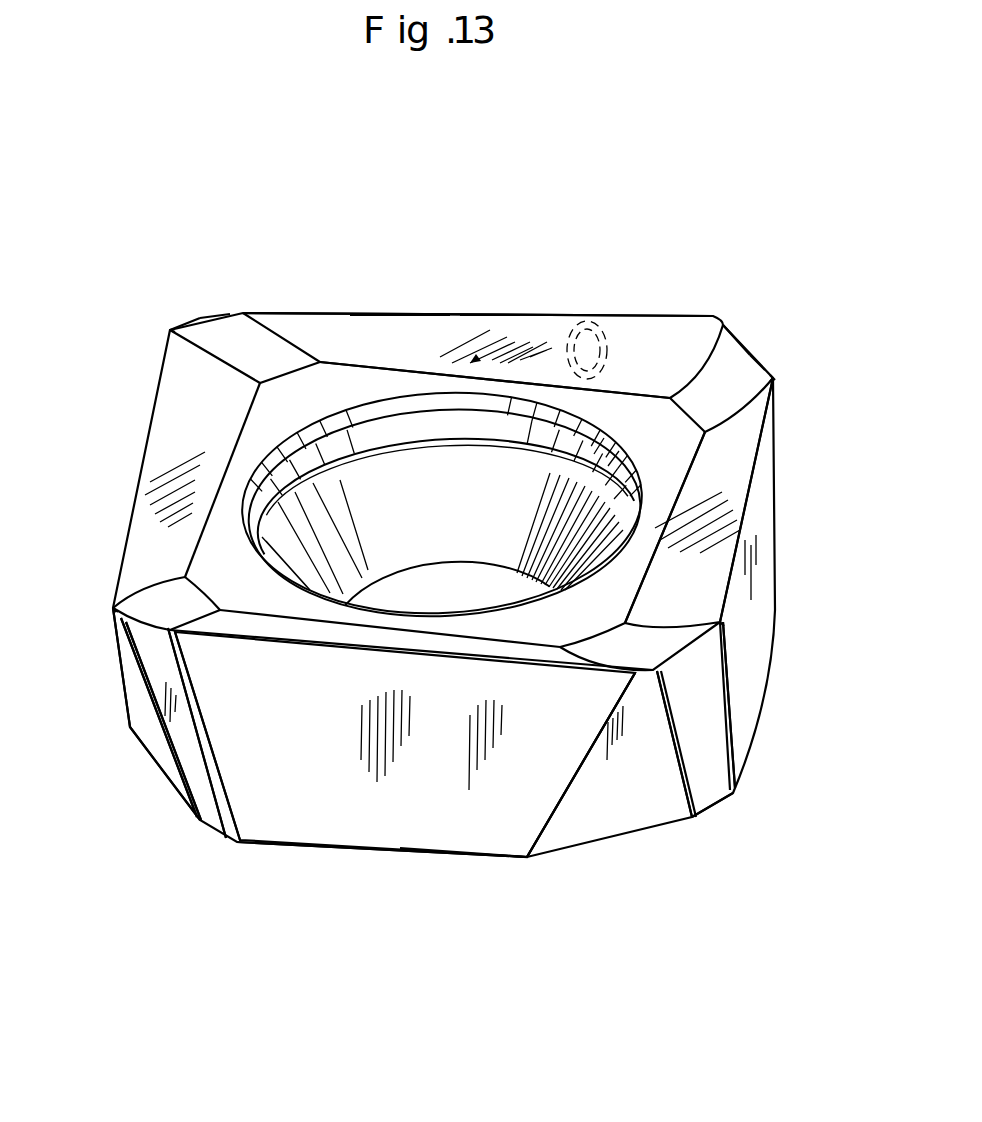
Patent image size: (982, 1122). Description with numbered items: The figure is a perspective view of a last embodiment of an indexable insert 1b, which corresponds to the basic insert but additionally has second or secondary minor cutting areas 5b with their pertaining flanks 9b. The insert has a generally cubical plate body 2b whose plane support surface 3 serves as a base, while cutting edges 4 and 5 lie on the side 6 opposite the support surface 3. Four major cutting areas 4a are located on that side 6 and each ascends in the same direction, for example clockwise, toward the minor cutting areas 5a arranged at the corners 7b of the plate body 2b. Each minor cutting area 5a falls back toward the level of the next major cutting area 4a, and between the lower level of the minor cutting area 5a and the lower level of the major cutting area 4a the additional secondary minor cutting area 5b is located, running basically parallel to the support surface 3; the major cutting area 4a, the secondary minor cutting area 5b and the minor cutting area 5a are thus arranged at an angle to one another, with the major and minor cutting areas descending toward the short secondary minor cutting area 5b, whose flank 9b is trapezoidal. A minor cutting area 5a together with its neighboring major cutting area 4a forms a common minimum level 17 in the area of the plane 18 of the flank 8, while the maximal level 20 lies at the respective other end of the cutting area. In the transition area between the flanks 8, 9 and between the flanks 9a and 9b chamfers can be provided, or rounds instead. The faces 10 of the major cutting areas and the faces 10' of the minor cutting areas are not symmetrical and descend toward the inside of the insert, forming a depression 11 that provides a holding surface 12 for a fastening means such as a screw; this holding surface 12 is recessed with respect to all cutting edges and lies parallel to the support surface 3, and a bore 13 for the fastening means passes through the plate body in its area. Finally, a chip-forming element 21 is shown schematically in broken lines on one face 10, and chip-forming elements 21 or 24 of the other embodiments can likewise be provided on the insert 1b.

The indexable insert 1b is at (286, 308).
The plate body 2b is at (392, 310).
The support surface 3 is at (413, 857).
The cutting edge 4 is at (488, 313).
The major cutting area 4a is at (562, 313).
The cutting edge 5 is at (183, 323).
The minor cutting area 5a is at (220, 317).
The secondary minor cutting area 5b is at (243, 313).
The side 6 is at (637, 412).
The corner 7b is at (203, 320).
The flank 8 is at (172, 403).
The flank 9 is at (188, 745).
The flank 9a is at (215, 830).
The flank 9b is at (155, 745).
The face 10 is at (503, 472).
The face 10' is at (443, 491).
The depression 11 is at (667, 398).
The holding surface 12 is at (633, 568).
The bore 13 is at (327, 500).
The minimum level 17 is at (673, 683).
The plane of the flank 18 is at (493, 818).
The maximal level 20 is at (723, 622).
The chip-forming element 21 is at (612, 413).
The chip-forming element 24 is at (587, 350).